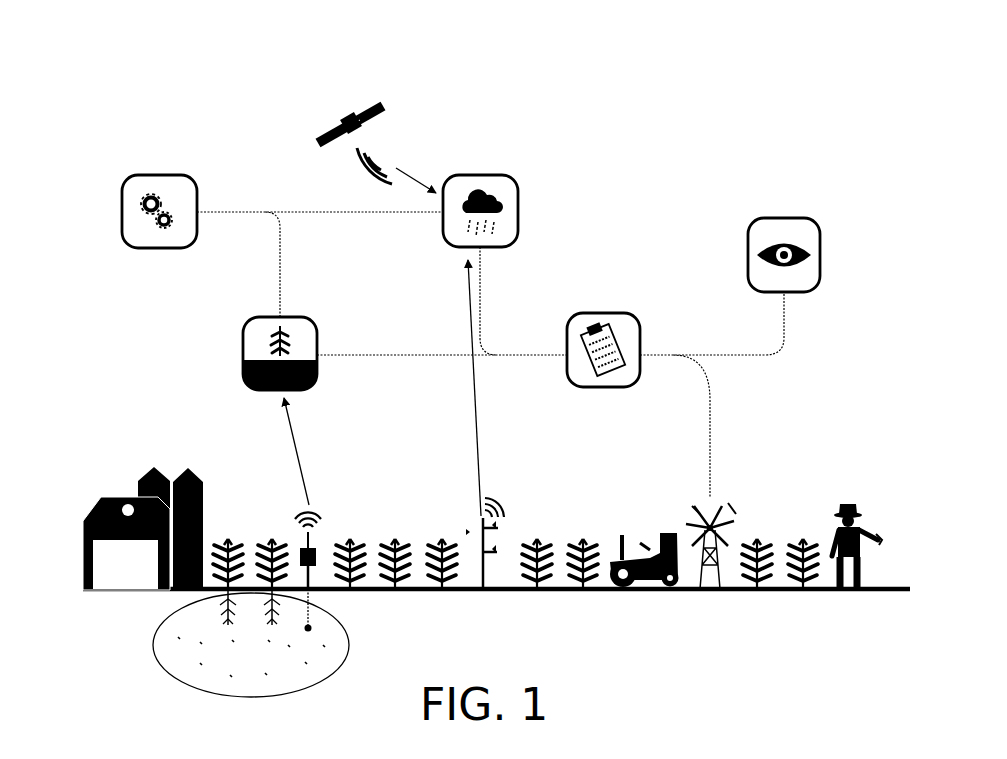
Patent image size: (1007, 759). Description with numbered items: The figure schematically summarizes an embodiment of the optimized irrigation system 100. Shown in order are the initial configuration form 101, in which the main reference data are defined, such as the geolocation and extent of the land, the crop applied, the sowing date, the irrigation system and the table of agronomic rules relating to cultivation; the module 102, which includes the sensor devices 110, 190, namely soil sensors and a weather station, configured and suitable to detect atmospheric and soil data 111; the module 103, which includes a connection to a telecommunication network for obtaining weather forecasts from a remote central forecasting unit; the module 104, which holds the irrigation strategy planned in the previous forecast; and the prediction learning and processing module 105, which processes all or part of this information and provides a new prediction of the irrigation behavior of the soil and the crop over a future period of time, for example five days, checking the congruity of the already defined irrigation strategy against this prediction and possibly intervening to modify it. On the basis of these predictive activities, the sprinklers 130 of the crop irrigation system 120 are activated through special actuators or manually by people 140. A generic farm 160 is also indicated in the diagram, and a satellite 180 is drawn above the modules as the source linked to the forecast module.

The optimized irrigation system 100 is at (222, 128).
The initial configuration form 101 is at (130, 178).
The module 102 is at (245, 322).
The module 103 is at (516, 182).
The module 104 is at (604, 316).
The prediction learning and processing module 105 is at (797, 218).
The sensor device 110 is at (292, 530).
The atmospheric and soil data 111 is at (188, 653).
The crop irrigation system 120 is at (433, 536).
The sprinklers 130 is at (728, 535).
The people 140 is at (868, 532).
The generic farm 160 is at (108, 515).
The satellite 180 is at (392, 150).
The sensor device 190 is at (495, 528).